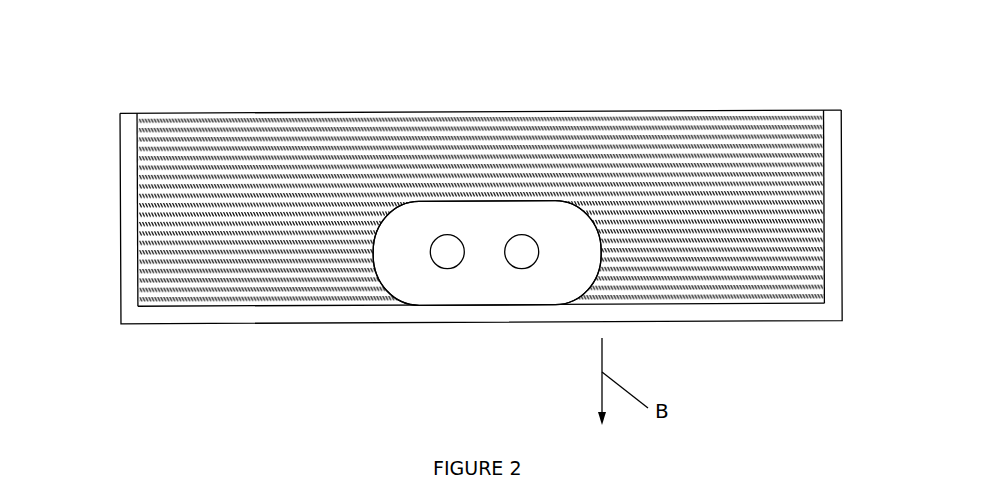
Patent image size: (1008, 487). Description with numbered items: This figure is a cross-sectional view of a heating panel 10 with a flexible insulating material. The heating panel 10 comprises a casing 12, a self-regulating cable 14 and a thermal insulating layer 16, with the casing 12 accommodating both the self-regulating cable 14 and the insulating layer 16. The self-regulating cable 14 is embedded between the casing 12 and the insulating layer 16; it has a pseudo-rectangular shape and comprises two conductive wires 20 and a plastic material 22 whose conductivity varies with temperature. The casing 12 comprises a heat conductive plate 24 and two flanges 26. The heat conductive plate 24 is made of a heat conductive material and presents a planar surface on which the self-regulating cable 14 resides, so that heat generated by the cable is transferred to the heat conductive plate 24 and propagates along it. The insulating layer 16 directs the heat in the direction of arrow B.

The heating panel 10 is at (99, 46).
The casing 12 is at (710, 320).
The self-regulating cable 14 is at (552, 198).
The thermal insulating layer 16 is at (282, 148).
The conductive wires 20 is at (521, 254).
The plastic material 22 is at (487, 252).
The heat conductive plate 24 is at (299, 313).
The flanges 26 is at (128, 220).